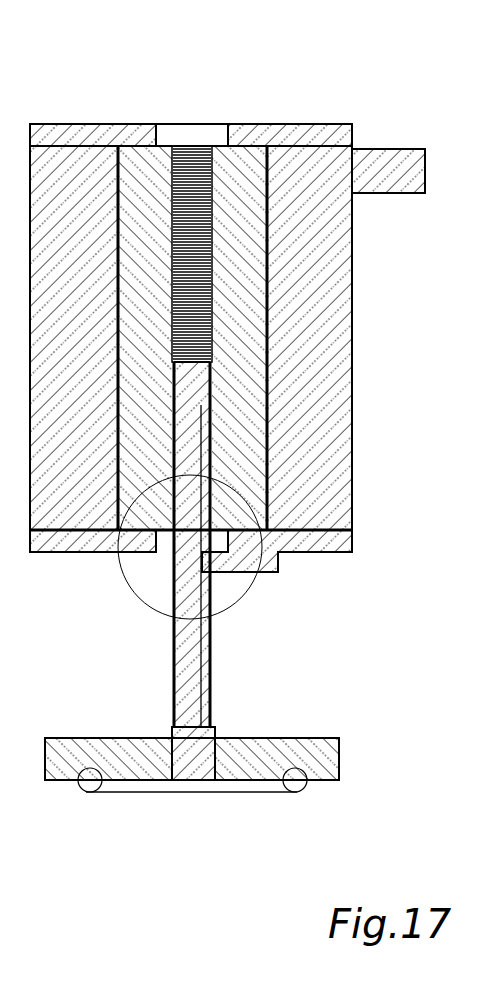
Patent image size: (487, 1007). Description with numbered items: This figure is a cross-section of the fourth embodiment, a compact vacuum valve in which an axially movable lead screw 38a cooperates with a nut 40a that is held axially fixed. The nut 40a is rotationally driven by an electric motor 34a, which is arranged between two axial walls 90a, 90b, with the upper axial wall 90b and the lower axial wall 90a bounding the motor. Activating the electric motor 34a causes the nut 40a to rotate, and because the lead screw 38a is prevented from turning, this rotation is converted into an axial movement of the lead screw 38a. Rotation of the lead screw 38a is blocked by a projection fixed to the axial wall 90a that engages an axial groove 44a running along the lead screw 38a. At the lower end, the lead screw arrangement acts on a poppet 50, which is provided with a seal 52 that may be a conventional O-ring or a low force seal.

The electric motor 34a is at (351, 445).
The lead screw 38a is at (187, 640).
The nut 40a is at (250, 323).
The axial groove 44a is at (208, 673).
The poppet 50 is at (339, 762).
The seal 52 is at (297, 793).
The axial wall 90a is at (352, 548).
The axial wall 90b is at (288, 125).